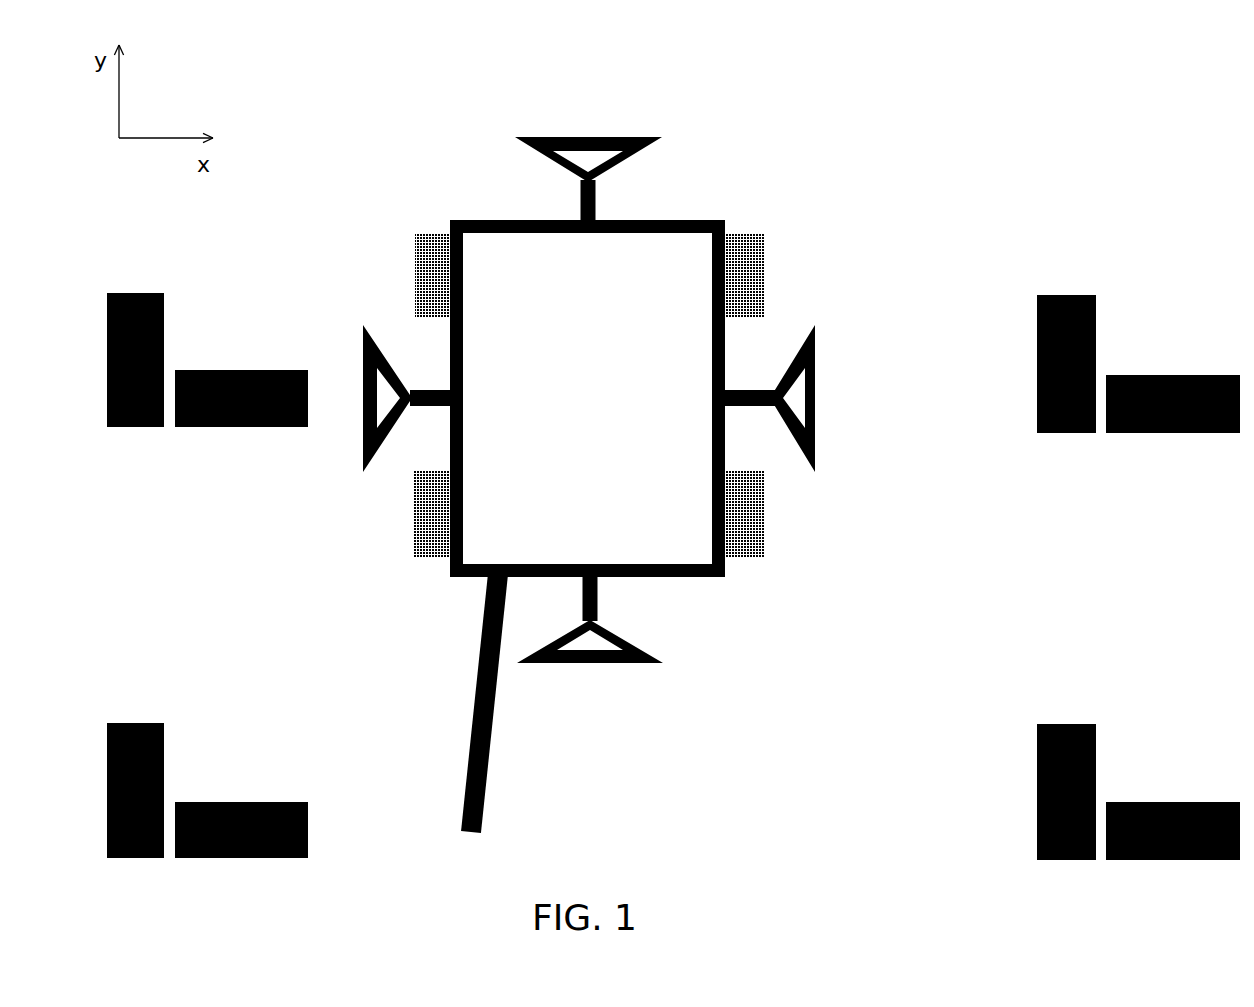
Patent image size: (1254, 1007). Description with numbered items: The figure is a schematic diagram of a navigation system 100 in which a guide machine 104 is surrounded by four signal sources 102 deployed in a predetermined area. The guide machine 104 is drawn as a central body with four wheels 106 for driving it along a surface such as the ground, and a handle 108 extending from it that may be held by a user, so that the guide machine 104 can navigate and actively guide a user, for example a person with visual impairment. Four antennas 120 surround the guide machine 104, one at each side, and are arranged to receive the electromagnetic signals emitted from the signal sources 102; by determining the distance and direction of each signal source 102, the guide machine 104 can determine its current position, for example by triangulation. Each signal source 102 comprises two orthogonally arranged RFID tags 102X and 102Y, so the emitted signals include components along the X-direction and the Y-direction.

The navigation system 100 is at (676, 449).
The signal sources 102 is at (676, 539).
The RFID tag emitting along X-direction 102X is at (1057, 295).
The RFID tag emitting along Y-direction 102Y is at (1172, 375).
The guide machine 104 is at (622, 292).
The wheels 106 is at (752, 268).
The handle 108 is at (490, 755).
The antennas 120 is at (822, 388).